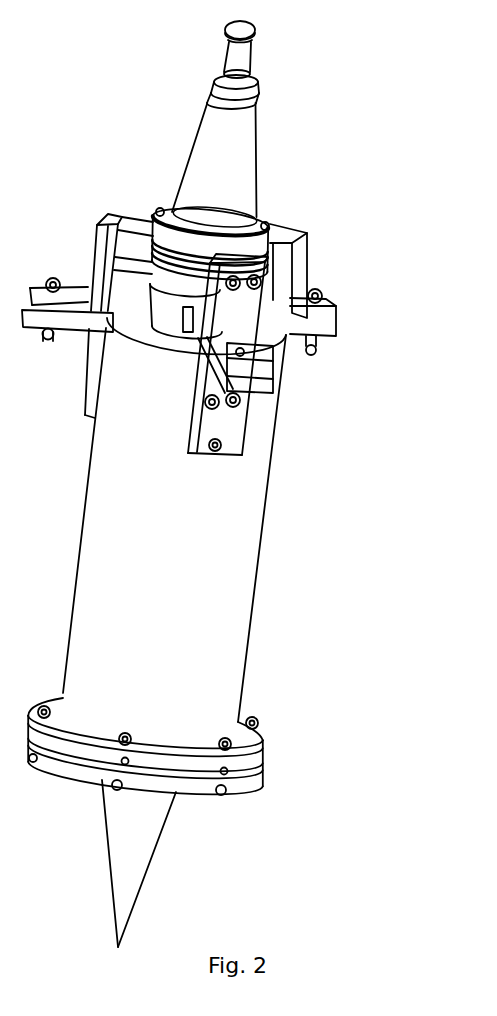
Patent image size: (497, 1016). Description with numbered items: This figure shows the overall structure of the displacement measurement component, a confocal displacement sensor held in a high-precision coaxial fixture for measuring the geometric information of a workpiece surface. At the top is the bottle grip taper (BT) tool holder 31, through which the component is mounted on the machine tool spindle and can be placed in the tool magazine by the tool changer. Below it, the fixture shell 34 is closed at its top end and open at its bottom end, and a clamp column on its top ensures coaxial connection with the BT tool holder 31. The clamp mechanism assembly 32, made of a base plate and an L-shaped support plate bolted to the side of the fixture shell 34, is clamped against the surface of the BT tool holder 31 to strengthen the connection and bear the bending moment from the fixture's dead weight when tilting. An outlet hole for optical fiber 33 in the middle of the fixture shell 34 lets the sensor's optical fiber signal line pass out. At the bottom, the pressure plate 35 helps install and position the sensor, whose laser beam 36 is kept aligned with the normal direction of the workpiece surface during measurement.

The bottle grip taper (BT) tool holder 31 is at (247, 172).
The clamp mechanism assembly 32 is at (300, 243).
The outlet hole for optical fiber 33 is at (225, 450).
The fixture shell 34 is at (217, 556).
The pressure plate 35 is at (265, 753).
The laser beam 36 is at (122, 849).